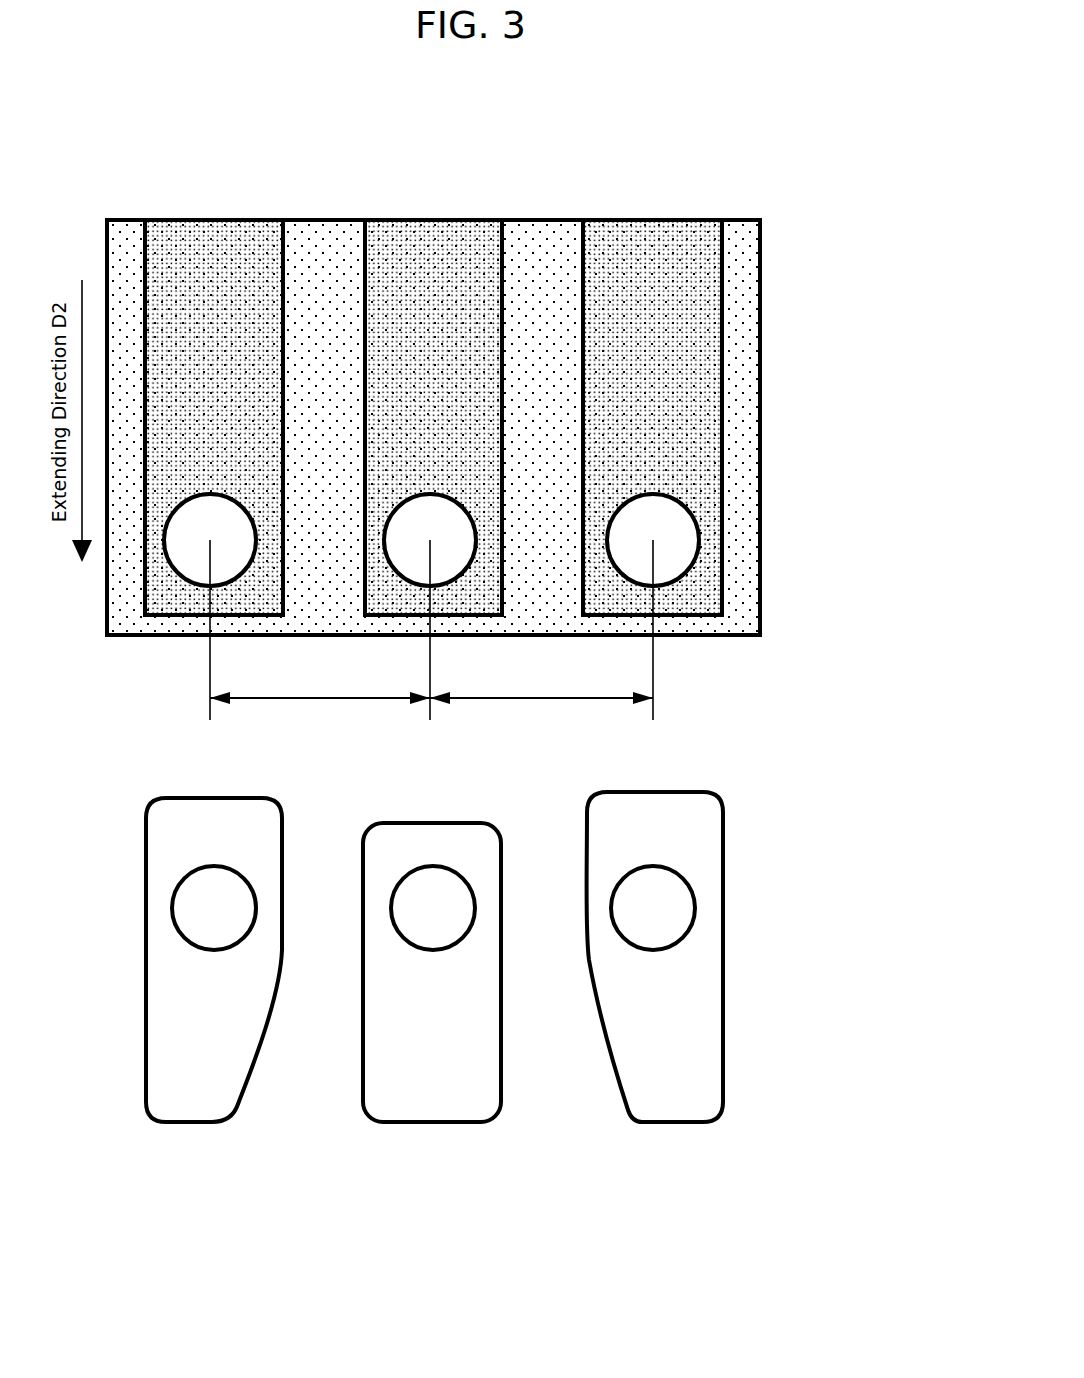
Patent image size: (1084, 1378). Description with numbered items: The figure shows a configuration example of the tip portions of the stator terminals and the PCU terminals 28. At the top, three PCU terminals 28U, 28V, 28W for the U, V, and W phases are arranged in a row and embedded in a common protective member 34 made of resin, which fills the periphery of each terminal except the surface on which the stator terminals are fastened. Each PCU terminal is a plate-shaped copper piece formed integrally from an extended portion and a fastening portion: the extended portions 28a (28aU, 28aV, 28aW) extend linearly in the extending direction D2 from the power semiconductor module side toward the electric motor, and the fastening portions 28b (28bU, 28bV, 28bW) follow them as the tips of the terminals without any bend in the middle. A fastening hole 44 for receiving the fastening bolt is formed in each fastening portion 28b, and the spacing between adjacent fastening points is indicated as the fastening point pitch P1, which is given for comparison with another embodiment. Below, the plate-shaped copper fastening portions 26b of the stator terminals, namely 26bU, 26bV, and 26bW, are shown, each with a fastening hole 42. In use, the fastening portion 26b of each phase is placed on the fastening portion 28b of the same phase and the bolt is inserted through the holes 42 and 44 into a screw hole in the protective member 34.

The PCU terminals 28 is at (433, 341).
The U-phase PCU terminal 28U is at (241, 195).
The V-phase PCU terminal 28V is at (423, 195).
The W-phase PCU terminal 28W is at (647, 378).
The protective member 34 is at (130, 243).
The extended portion of U-phase PCU terminal 28aU is at (237, 315).
The extended portion of V-phase PCU terminal 28aV is at (430, 350).
The extended portion of W-phase PCU terminal 28aW is at (653, 383).
The extended portions 28a is at (873, 297).
The fastening portion of U-phase PCU terminal 28bU is at (262, 492).
The fastening portion of V-phase PCU terminal 28bV is at (478, 493).
The fastening portion of W-phase PCU terminal 28bW is at (705, 512).
The fastening portions 28b is at (873, 433).
The fastening hole 44 is at (193, 557).
The fastening point pitch P1 is at (431, 630).
The fastening portions 26b is at (434, 1056).
The fastening portion of U-phase stator terminal 26bU is at (190, 1093).
The fastening portion of V-phase stator terminal 26bV is at (445, 1070).
The fastening portion of W-phase stator terminal 26bW is at (643, 1013).
The fastening hole 42 is at (198, 900).